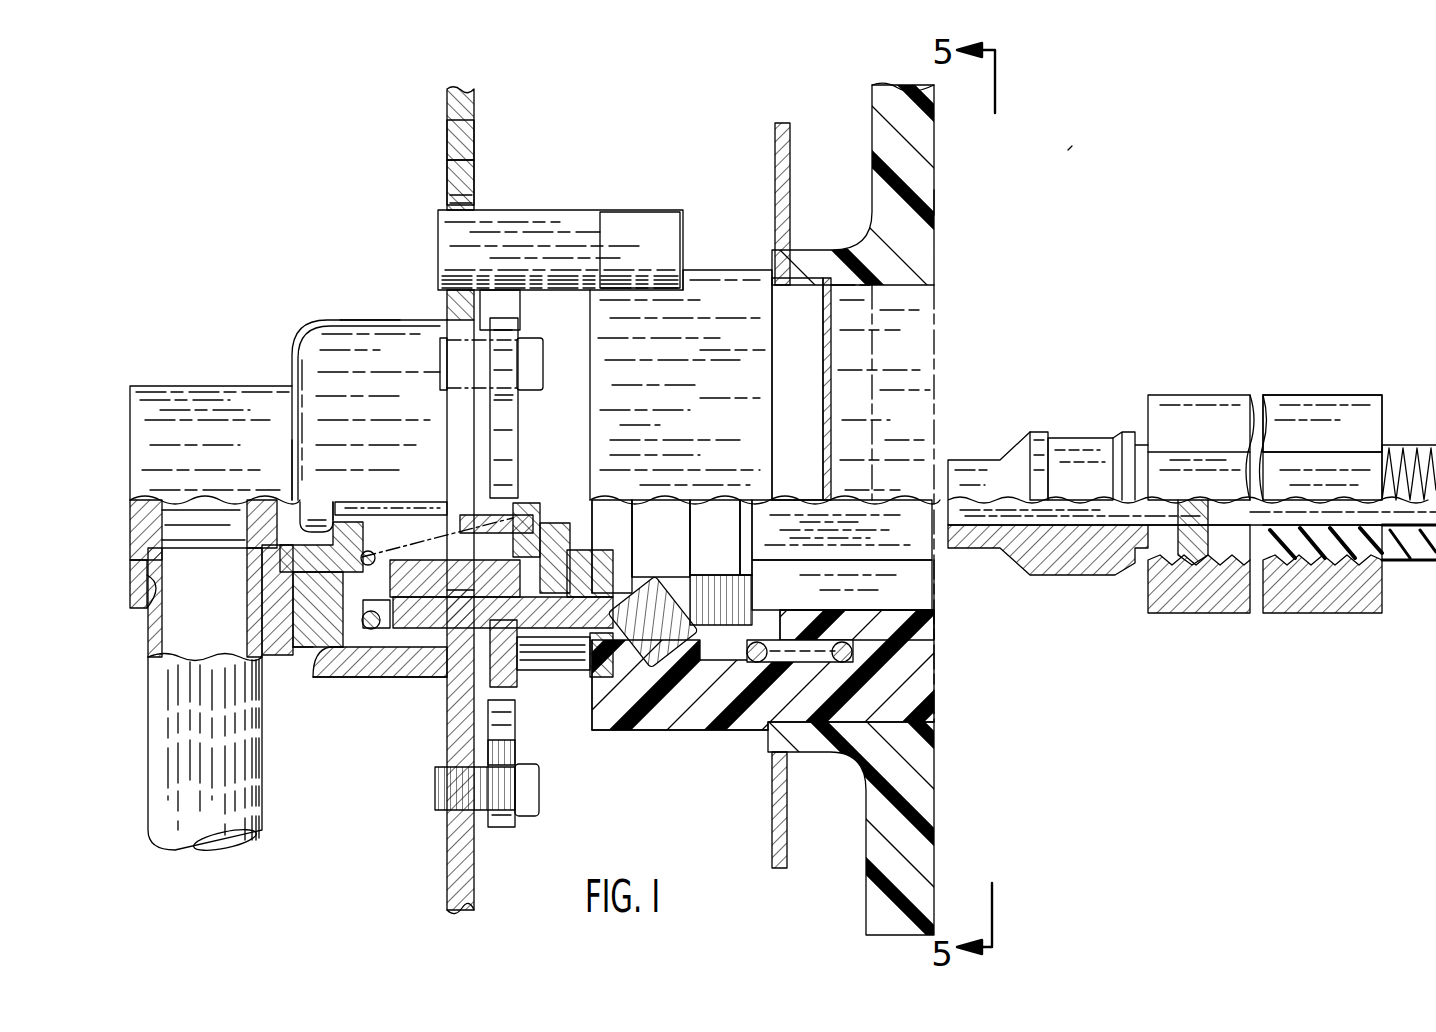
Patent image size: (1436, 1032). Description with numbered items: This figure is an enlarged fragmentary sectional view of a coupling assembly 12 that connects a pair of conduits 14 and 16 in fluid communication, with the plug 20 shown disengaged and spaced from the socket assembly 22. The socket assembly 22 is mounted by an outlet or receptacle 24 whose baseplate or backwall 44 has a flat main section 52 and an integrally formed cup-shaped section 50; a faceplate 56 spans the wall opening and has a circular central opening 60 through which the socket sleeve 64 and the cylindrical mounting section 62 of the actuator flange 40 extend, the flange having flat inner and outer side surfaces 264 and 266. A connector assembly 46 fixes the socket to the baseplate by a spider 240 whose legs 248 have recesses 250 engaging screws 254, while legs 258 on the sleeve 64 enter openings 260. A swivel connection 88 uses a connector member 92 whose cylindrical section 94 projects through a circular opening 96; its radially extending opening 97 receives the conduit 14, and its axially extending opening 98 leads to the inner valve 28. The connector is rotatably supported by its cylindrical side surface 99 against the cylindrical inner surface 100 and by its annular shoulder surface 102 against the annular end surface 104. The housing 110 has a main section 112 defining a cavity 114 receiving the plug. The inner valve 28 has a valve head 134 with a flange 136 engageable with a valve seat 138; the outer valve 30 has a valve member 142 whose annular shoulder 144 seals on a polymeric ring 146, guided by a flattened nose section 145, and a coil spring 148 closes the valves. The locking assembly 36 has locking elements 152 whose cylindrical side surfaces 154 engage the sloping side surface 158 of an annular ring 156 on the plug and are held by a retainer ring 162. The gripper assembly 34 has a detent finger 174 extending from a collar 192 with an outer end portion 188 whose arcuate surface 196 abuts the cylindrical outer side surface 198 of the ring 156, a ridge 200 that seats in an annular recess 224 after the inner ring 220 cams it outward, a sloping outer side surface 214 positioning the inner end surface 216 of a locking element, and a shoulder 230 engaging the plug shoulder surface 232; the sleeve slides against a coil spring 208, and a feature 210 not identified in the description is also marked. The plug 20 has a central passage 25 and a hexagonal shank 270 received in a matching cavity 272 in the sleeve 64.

The coupling assembly 12 is at (1068, 150).
The conduit 14 is at (165, 800).
The conduit 16 is at (1434, 600).
The plug 20 is at (1210, 390).
The socket assembly 22 is at (678, 128).
The outlet or receptacle 24 is at (415, 127).
The central passage 25 is at (985, 508).
The inner valve 28 is at (325, 487).
The outer valve 30 is at (595, 490).
The gripper assembly 34 is at (700, 735).
The locking assembly 36 is at (655, 735).
The actuator flange 40 is at (937, 170).
The baseplate or backwall 44 is at (440, 175).
The connector assembly 46 is at (500, 305).
The cup-shaped section 50 is at (380, 305).
The flat main section 52 is at (465, 108).
The faceplate 56 is at (775, 180).
The circular central opening 60 is at (790, 780).
The cylindrical mounting section 62 is at (790, 745).
The socket sleeve 64 is at (600, 735).
The swivel connection 88 is at (330, 655).
The connector member 92 is at (258, 383).
The cylindrical section 94 is at (195, 400).
The circular opening 96 is at (318, 609).
The radially extending opening 97 is at (160, 590).
The axially extending opening 98 is at (180, 525).
The cylindrical side surface 99 is at (400, 677).
The cylindrical inner surface 100 is at (385, 660).
The annular shoulder surface 102 is at (260, 628).
The annular end surface 104 is at (292, 648).
The housing 110 is at (450, 690).
The main housing section 112 is at (530, 672).
The cavity 114 is at (655, 510).
The valve head 134 is at (338, 508).
The flange 136 is at (308, 508).
The valve seat 138 is at (352, 545).
The valve member 142 is at (535, 510).
The annular shoulder 144 is at (520, 515).
The nose section 145 is at (595, 515).
The polymeric ring 146 is at (415, 502).
The coil spring 148 is at (370, 578).
The locking elements 152 is at (655, 560).
The cylindrical side surface 154 is at (612, 620).
The annular ring 156 is at (1040, 430).
The sloping side surface 158 is at (1052, 575).
The retainer ring 162 is at (582, 670).
The detent finger 174 is at (770, 500).
The outer end portion 188 is at (715, 510).
The collar 192 is at (800, 605).
The arcuate side surface 196 is at (700, 520).
The cylindrical outer side surface 198 is at (1043, 477).
The arcuate ridge 200 is at (752, 525).
The coil spring 208 is at (860, 625).
The o-ring groove 210 is at (935, 658).
The sloping outer side surface 214 is at (710, 625).
The inner end surface 216 is at (700, 575).
The inner ring 220 is at (1125, 430).
The annular recess 224 is at (1143, 570).
The shoulders 230 is at (757, 585).
The shoulder surface 232 is at (1140, 580).
The spider 240 is at (510, 400).
The legs 248 is at (510, 325).
The recesses 250 is at (515, 760).
The screws 254 is at (535, 340).
The interlock legs 258 is at (620, 225).
The interlock openings 260 is at (445, 200).
The inner side surface 264 is at (872, 128).
The outer side surface 266 is at (940, 203).
The shank 270 is at (1340, 385).
The cavity 272 is at (935, 585).